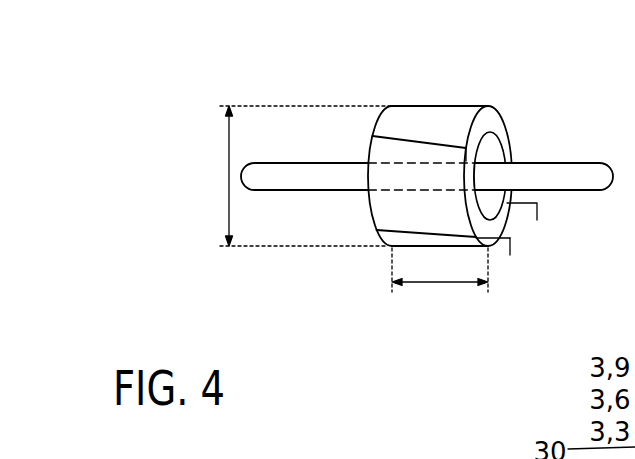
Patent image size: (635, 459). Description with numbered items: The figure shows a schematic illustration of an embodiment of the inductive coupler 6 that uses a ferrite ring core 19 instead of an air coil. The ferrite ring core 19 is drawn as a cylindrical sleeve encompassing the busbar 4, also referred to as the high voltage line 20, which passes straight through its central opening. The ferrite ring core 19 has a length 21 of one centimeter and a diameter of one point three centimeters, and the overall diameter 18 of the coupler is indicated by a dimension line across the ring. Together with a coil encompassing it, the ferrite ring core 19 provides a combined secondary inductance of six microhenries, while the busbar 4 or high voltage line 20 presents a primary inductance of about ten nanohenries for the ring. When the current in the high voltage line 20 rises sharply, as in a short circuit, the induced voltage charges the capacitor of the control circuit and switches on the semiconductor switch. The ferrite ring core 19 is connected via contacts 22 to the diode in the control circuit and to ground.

The inductive coupler 6 is at (267, 63).
The ferrite ring core 19 is at (434, 120).
The busbar 4 is at (432, 141).
The high voltage line 20 is at (583, 178).
The contacts 22 is at (540, 214).
The diameter 18 is at (229, 158).
The length 21 is at (437, 282).